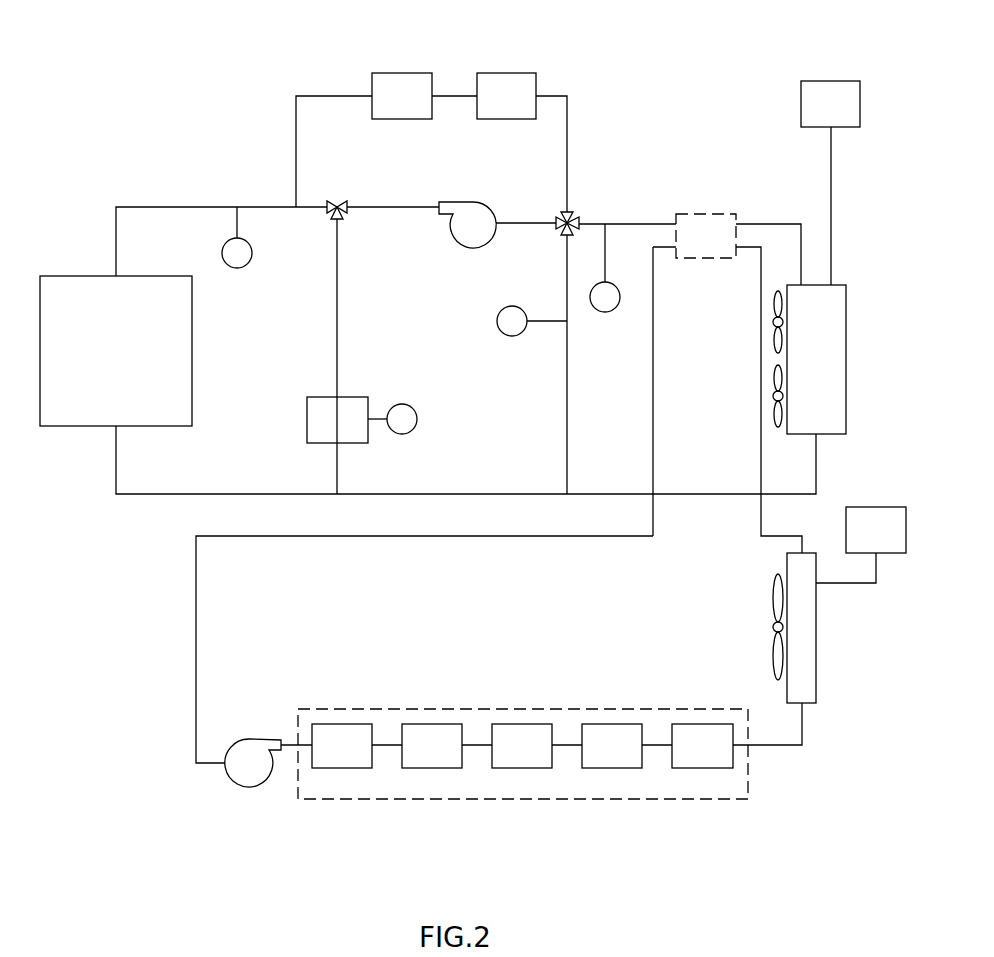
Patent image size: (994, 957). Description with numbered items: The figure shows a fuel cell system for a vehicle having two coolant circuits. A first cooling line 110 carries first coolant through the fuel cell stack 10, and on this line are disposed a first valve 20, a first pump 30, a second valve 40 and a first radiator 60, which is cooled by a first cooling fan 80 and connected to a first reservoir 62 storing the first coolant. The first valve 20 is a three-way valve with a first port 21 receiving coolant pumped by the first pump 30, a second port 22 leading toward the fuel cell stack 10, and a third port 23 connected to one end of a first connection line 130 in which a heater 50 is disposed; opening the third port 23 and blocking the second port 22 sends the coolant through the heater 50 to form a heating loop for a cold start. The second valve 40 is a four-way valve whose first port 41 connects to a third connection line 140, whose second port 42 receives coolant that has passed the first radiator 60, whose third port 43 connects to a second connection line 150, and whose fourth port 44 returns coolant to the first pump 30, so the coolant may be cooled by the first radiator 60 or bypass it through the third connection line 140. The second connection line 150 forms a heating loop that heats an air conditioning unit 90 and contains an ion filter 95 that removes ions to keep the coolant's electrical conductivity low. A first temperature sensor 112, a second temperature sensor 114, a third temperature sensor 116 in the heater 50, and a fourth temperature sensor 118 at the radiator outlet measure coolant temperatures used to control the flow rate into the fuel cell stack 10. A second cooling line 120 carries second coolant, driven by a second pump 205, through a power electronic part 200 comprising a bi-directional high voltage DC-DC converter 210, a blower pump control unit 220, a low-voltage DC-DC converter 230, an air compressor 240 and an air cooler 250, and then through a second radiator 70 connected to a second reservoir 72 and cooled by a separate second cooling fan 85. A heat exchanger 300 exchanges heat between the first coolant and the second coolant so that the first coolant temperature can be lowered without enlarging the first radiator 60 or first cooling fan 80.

The fuel cell stack 10 is at (62, 276).
The first valve 20 is at (337, 209).
The first port 21 is at (348, 213).
The second port 22 is at (326, 213).
The third port 23 is at (336, 221).
The first pump 30 is at (473, 203).
The second valve 40 is at (571, 223).
The first port 41 is at (564, 237).
The second port 42 is at (574, 214).
The third port 43 is at (562, 214).
The fourth port 44 is at (556, 227).
The heater 50 is at (307, 419).
The first radiator 60 is at (846, 360).
The first reservoir 62 is at (831, 81).
The second radiator 70 is at (816, 655).
The second reservoir 72 is at (876, 507).
The first cooling fan 80 is at (773, 396).
The second cooling fan 85 is at (773, 627).
The air conditioning unit 90 is at (402, 73).
The ion filter 95 is at (507, 73).
The first cooling line 110 is at (175, 207).
The first temperature sensor 112 is at (237, 268).
The second temperature sensor 114 is at (497, 321).
The third temperature sensor 116 is at (402, 404).
The fourth temperature sensor 118 is at (605, 312).
The second cooling line 120 is at (196, 650).
The first connection line 130 is at (337, 468).
The third connection line 140 is at (567, 419).
The second connection line 150 is at (318, 96).
The power electronic part 200 is at (556, 736).
The second pump 205 is at (260, 740).
The bi-directional high voltage DC-DC converter 210 is at (342, 724).
The blower pump control unit 220 is at (432, 724).
The low-voltage DC-DC converter 230 is at (522, 724).
The air compressor 240 is at (612, 724).
The air cooler 250 is at (702, 724).
The heat exchanger 300 is at (705, 214).